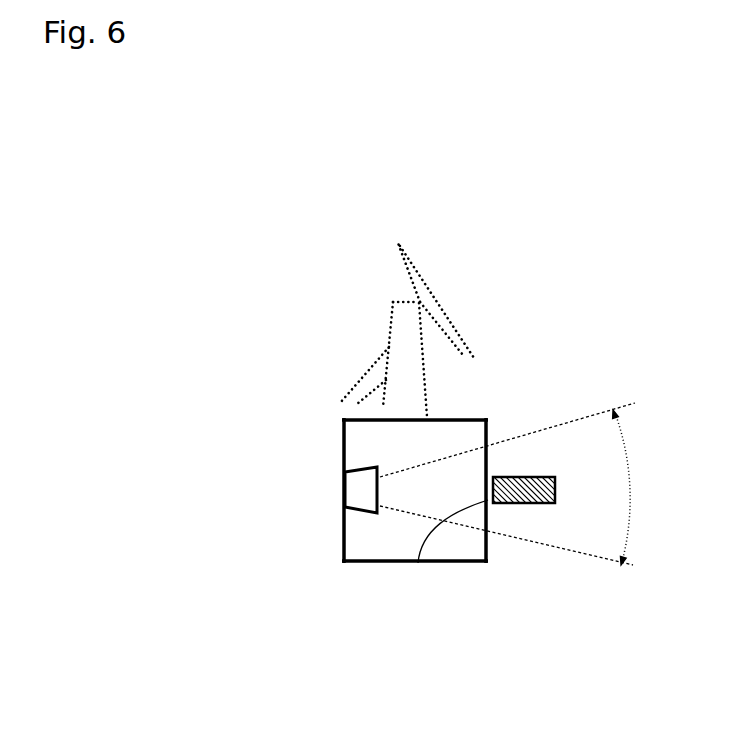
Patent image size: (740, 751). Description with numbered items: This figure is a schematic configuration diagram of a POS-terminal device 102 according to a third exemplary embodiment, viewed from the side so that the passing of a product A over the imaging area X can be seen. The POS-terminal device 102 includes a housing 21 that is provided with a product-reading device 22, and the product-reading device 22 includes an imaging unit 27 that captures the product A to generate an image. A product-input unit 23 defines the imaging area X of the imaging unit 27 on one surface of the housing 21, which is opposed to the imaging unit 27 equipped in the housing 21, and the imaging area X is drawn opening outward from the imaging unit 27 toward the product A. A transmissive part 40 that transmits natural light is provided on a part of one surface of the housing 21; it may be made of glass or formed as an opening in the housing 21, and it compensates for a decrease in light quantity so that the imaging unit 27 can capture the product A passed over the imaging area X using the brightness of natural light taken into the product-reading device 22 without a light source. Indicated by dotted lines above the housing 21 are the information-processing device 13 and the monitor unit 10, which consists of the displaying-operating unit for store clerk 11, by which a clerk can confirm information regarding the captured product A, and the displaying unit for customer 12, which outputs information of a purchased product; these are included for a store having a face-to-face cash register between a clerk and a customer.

The POS-terminal device 102 is at (570, 152).
The monitor unit 10 is at (278, 231).
The displaying-operating unit for store clerk 11 is at (397, 253).
The displaying unit for customer 12 is at (358, 378).
The information-processing device 13 is at (393, 412).
The housing 21 is at (398, 563).
The product-reading device 22 is at (360, 548).
The product-input unit 23 is at (418, 563).
The imaging unit 27 is at (362, 492).
The transmissive part 40 is at (490, 430).
The product A is at (533, 477).
The imaging area X is at (509, 484).